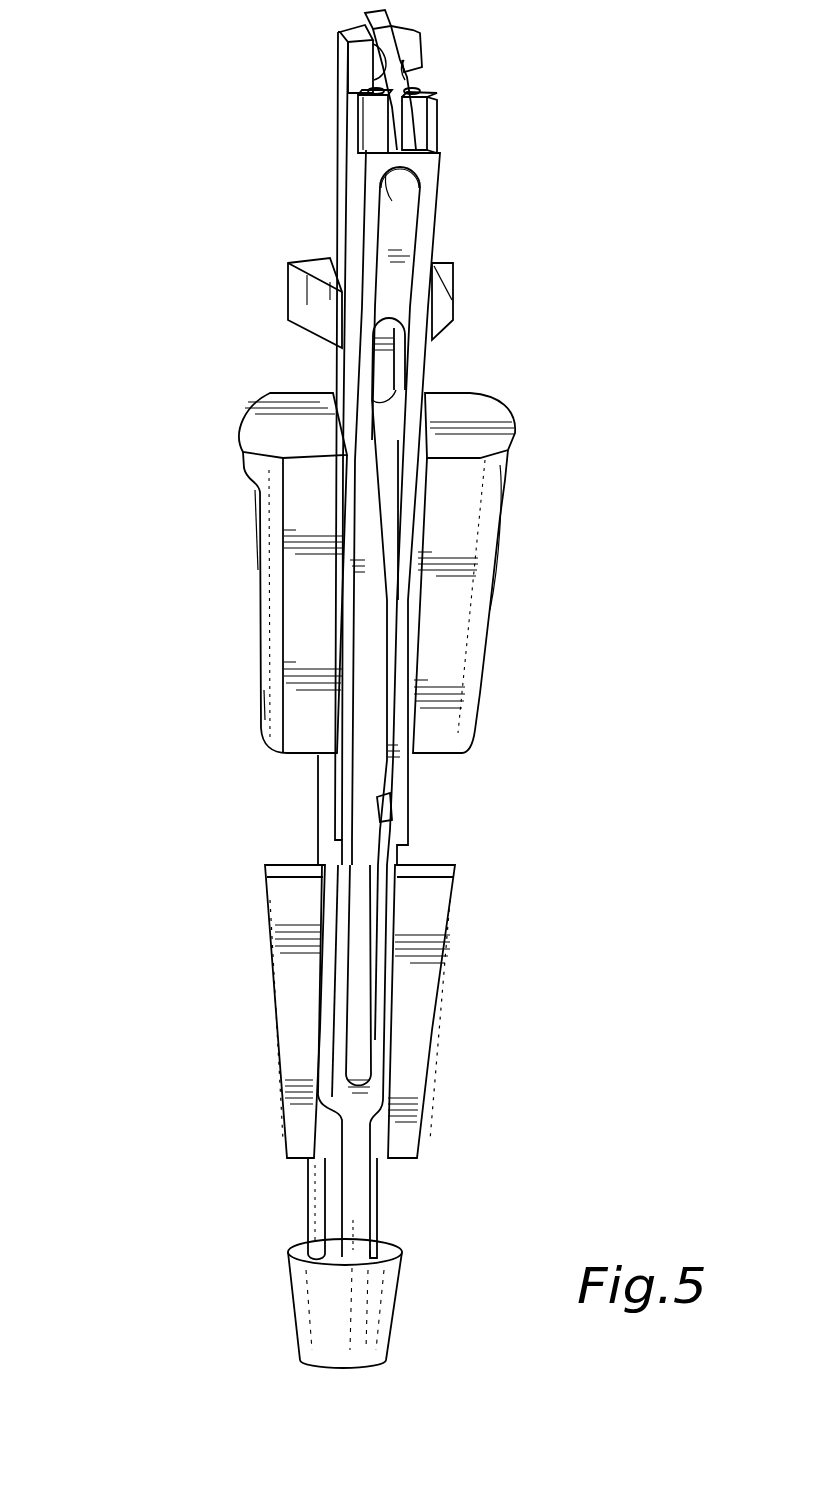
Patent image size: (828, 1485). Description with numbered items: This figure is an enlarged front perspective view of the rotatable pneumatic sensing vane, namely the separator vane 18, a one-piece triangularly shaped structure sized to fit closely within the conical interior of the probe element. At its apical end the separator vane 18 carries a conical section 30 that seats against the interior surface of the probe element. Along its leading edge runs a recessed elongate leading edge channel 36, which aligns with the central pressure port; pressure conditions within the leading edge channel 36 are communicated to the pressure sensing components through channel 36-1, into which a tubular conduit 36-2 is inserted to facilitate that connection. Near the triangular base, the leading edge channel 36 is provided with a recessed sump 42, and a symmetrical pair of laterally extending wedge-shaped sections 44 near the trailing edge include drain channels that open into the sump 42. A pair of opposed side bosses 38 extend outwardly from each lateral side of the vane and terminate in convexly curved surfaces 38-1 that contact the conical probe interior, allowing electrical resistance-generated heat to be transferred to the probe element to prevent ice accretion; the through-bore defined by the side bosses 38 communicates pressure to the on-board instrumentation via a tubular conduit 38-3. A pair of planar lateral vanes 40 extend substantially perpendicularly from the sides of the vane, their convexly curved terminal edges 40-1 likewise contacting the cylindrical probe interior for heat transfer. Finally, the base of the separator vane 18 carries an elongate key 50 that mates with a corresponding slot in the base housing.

The separator vane 18 is at (258, 786).
The conical section 30 is at (350, 1320).
The leading edge channel 36 is at (383, 602).
The channel 36-1 is at (386, 180).
The tubular conduit 36-2 is at (360, 118).
The side bosses 38 is at (466, 520).
The convexly curved surface 38-1 is at (505, 456).
The tubular conduit 38-3 is at (432, 100).
The planar lateral vanes 40 is at (437, 913).
The terminal edges 40-1 is at (274, 1010).
The recessed sump 42 is at (376, 364).
The wedge-shaped sections 44 is at (305, 298).
The elongate key 50 is at (343, 50).